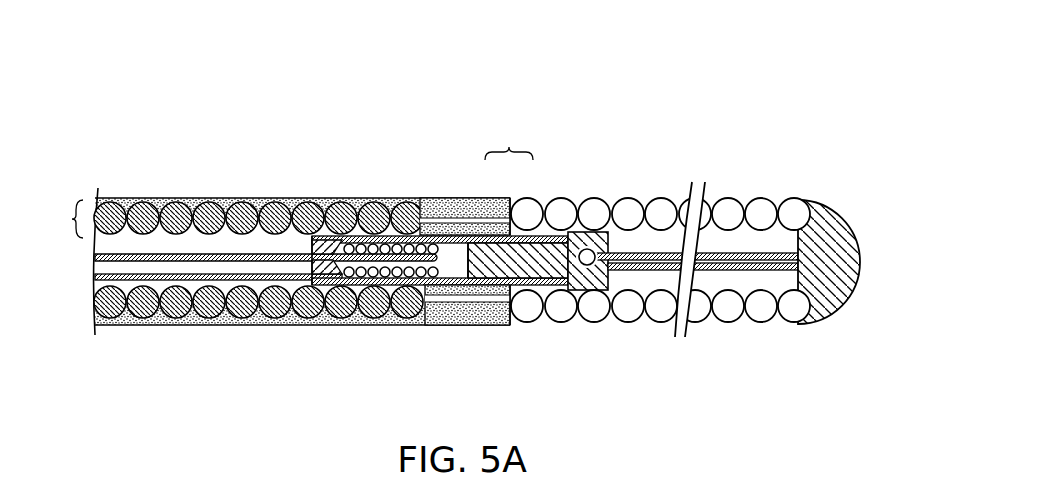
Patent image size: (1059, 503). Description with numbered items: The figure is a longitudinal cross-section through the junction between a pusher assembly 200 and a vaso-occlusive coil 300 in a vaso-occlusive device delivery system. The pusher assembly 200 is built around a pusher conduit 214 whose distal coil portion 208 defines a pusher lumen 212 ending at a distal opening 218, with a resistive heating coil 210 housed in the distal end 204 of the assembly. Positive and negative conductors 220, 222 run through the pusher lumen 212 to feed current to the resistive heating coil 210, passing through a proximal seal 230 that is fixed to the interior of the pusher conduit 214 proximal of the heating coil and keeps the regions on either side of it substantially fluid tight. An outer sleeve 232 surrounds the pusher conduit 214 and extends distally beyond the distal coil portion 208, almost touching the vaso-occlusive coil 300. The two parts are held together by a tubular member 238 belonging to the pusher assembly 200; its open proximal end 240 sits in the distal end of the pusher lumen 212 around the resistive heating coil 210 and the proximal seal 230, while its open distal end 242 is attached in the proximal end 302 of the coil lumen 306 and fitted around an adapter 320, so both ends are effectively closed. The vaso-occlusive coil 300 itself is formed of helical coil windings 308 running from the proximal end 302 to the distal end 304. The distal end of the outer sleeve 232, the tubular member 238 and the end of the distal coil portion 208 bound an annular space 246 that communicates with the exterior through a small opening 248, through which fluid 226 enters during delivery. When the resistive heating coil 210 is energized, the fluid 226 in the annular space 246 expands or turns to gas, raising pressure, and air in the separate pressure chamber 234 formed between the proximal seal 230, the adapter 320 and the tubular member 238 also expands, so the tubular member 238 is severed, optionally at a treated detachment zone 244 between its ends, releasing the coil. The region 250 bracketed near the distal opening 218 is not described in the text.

The pusher assembly 200 is at (304, 235).
The distal end 204 is at (424, 246).
The distal coil portion 208 is at (110, 213).
The resistive heating coil 210 is at (326, 200).
The pusher lumen 212 is at (138, 243).
The pusher conduit 214 is at (57, 219).
The distal opening 218 is at (512, 197).
The positive conductor 220 is at (187, 254).
The negative conductor 222 is at (152, 278).
The fluid 226 is at (428, 210).
The proximal seal 230 is at (341, 323).
The outer sleeve 232 is at (227, 207).
The pressure chamber 234 is at (455, 263).
The tubular member 238 is at (515, 287).
The proximal end 240 is at (333, 275).
The distal end 242 is at (565, 290).
The detachment zone 244 is at (418, 323).
The annular space 246 is at (460, 208).
The small opening 248 is at (510, 293).
The joint region 250 is at (509, 140).
The vaso-occlusive coil 300 is at (698, 205).
The proximal end 302 is at (660, 229).
The distal end 304 is at (802, 163).
The lumen 306 is at (744, 272).
The coil windings 308 is at (762, 312).
The adapter 320 is at (598, 280).